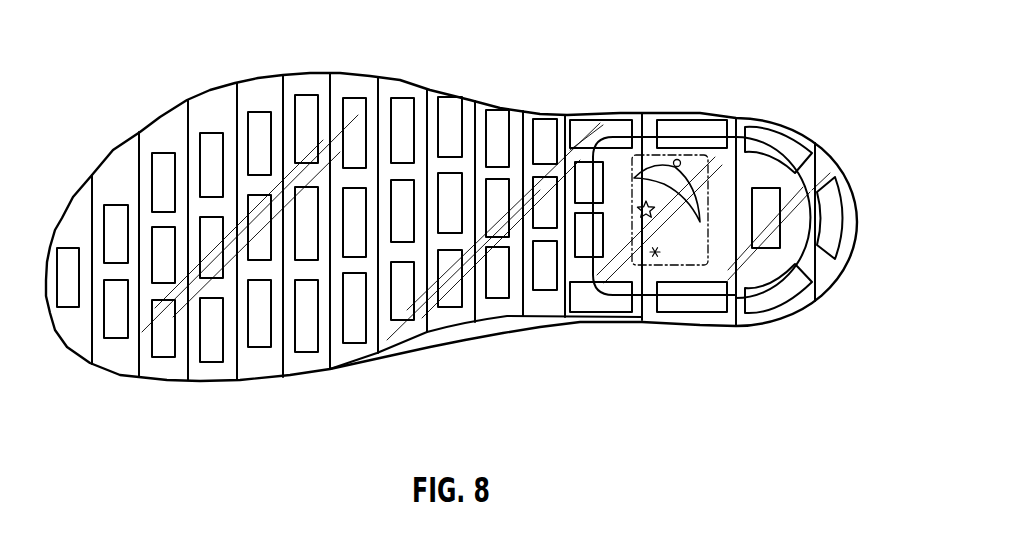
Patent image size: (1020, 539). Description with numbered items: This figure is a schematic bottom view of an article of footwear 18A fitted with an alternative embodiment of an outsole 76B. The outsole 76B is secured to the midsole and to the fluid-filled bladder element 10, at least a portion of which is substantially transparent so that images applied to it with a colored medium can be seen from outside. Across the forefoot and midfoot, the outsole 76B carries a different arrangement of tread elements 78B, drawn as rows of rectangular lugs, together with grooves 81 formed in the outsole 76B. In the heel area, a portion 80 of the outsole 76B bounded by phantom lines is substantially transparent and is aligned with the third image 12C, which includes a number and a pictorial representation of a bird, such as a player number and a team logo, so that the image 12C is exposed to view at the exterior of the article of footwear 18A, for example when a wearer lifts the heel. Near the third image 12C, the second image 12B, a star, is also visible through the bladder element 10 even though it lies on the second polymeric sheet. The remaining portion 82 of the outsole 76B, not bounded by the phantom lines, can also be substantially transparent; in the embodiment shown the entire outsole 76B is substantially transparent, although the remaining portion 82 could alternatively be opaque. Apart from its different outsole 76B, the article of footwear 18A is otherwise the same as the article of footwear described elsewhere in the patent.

The article of footwear 18A is at (768, 30).
The fluid-filled bladder element 10 is at (627, 133).
The second image 12B is at (640, 210).
The third image 12C is at (677, 162).
The substantially transparent portion 80 is at (693, 267).
The grooves 81 is at (200, 383).
The tread elements 78B is at (160, 350).
The outsole 76B is at (317, 362).
The remaining portion 82 is at (470, 115).